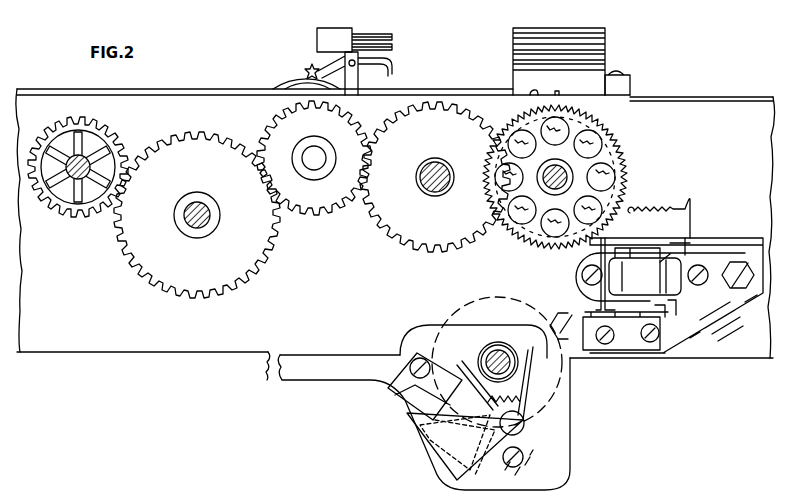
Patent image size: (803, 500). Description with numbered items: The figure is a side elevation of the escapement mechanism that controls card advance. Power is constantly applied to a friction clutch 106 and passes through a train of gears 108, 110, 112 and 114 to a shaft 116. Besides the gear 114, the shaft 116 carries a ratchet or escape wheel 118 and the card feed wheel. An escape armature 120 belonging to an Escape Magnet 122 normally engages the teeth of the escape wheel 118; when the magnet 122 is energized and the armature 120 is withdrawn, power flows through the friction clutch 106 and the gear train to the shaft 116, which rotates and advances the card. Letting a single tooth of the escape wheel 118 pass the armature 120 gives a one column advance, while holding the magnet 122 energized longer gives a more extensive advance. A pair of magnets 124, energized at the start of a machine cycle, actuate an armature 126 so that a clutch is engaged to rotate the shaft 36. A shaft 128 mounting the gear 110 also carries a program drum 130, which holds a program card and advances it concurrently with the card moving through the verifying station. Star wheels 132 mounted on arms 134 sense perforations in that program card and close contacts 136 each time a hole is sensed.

The shaft 36 is at (501, 352).
The friction clutch 106 is at (77, 203).
The gear 108 is at (207, 286).
The gear 110 is at (322, 216).
The gear 112 is at (418, 233).
The gear 114 is at (590, 141).
The shaft 116 is at (549, 190).
The ratchet wheel 118 is at (628, 178).
The escape armature 120 is at (641, 240).
The Escape Magnet 122 is at (645, 271).
The magnets 124 is at (460, 446).
The armature 126 is at (478, 364).
The shaft 128 is at (320, 168).
The program drum 130 is at (290, 84).
The star wheels 132 is at (310, 66).
The arms 134 is at (373, 66).
The contacts 136 is at (395, 42).